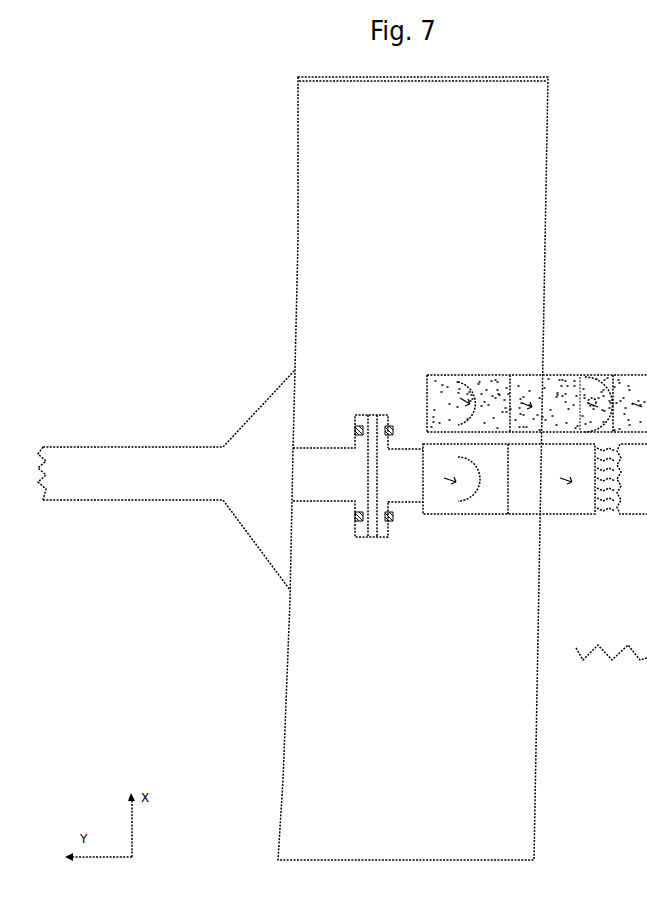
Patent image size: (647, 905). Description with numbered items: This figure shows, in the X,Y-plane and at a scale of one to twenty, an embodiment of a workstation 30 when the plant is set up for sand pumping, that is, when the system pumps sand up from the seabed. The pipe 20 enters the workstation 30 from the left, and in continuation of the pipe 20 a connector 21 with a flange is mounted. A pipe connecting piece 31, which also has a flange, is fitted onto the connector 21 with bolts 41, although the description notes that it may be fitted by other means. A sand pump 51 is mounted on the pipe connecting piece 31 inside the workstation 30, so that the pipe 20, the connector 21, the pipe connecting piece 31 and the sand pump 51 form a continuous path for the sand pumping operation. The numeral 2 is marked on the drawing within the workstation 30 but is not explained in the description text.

The interior space 2 is at (417, 209).
The pipe 20 is at (101, 416).
The connector 21 is at (336, 426).
The workstation 30 is at (252, 180).
The pipe connecting piece 31 is at (401, 429).
The bolts 41 is at (360, 522).
The sand pump 51 is at (489, 345).